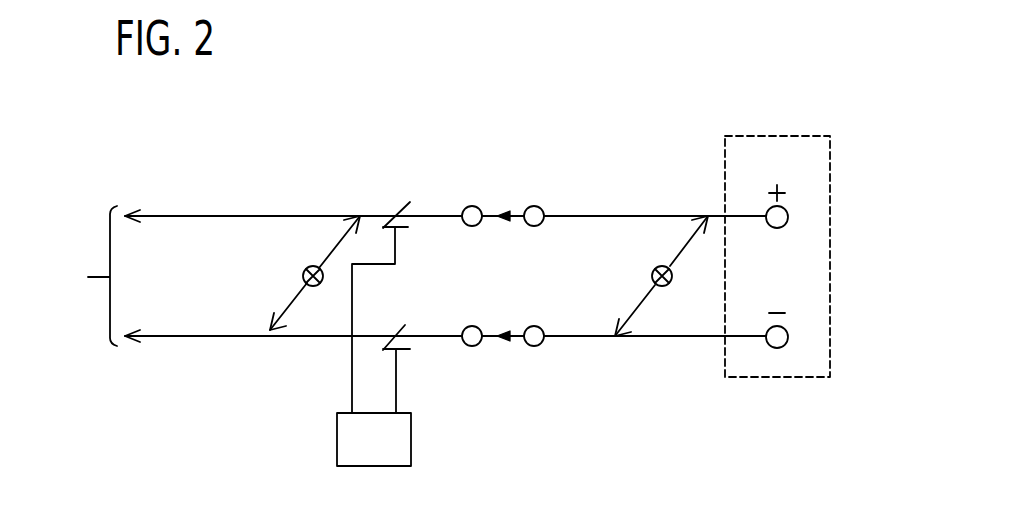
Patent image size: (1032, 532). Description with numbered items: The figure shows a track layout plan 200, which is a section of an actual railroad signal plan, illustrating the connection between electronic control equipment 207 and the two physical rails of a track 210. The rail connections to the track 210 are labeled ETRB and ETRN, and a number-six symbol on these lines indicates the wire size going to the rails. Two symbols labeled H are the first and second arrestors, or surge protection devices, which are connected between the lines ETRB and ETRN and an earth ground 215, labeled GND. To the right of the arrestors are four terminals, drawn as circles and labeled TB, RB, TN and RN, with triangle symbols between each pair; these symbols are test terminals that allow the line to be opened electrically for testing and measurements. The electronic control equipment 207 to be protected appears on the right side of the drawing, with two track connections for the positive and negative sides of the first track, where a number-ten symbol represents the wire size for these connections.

The track layout plan 200 is at (542, 92).
The electronic control equipment 207 is at (830, 247).
The track 210 is at (108, 320).
The earth ground 215 is at (337, 438).